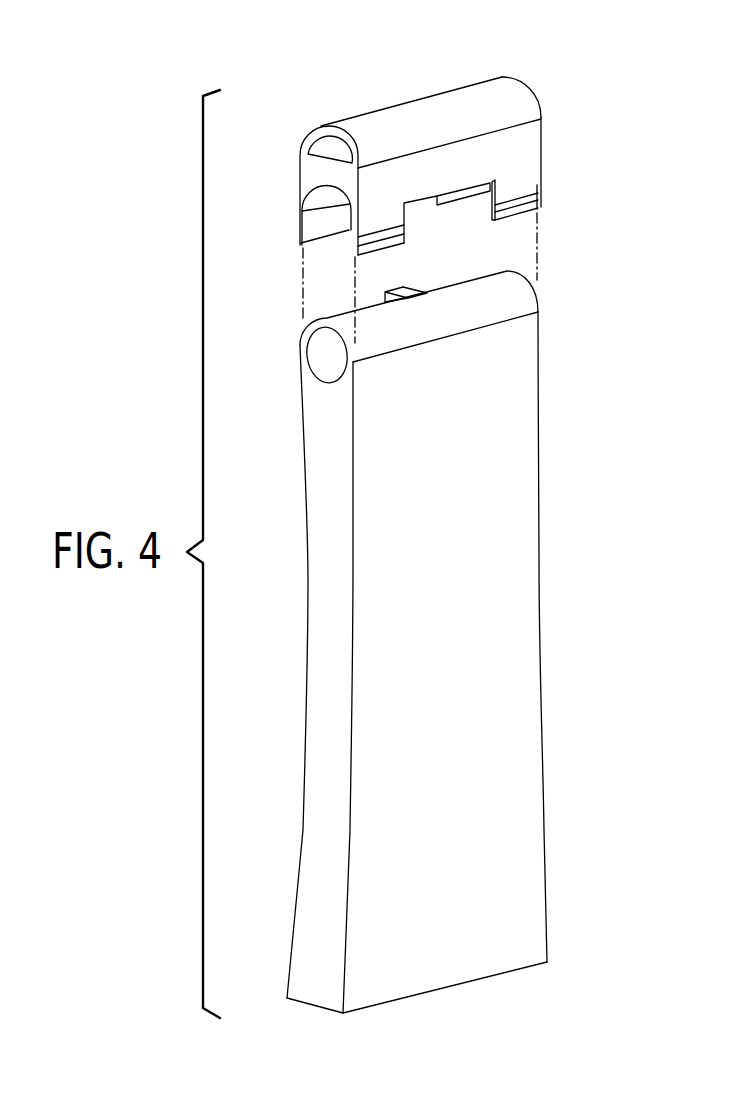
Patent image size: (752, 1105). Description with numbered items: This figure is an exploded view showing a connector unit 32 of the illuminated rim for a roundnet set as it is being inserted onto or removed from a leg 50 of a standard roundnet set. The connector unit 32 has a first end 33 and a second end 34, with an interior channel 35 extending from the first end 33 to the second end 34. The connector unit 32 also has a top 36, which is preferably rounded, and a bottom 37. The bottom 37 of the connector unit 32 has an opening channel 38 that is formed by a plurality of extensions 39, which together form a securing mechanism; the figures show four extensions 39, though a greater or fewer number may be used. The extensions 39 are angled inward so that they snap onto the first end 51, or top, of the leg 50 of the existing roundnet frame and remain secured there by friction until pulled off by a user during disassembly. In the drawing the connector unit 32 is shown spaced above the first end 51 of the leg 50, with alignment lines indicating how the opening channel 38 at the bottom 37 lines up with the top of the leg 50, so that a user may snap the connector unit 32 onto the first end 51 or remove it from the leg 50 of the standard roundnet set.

The connector unit 32 is at (513, 80).
The first end 33 is at (317, 128).
The second end 34 is at (540, 105).
The interior channel 35 is at (334, 157).
The top 36 is at (437, 90).
The bottom 37 is at (300, 242).
The opening channel 38 is at (320, 220).
The extensions 39 is at (538, 185).
The leg 50 is at (530, 622).
The first end 51 is at (523, 278).